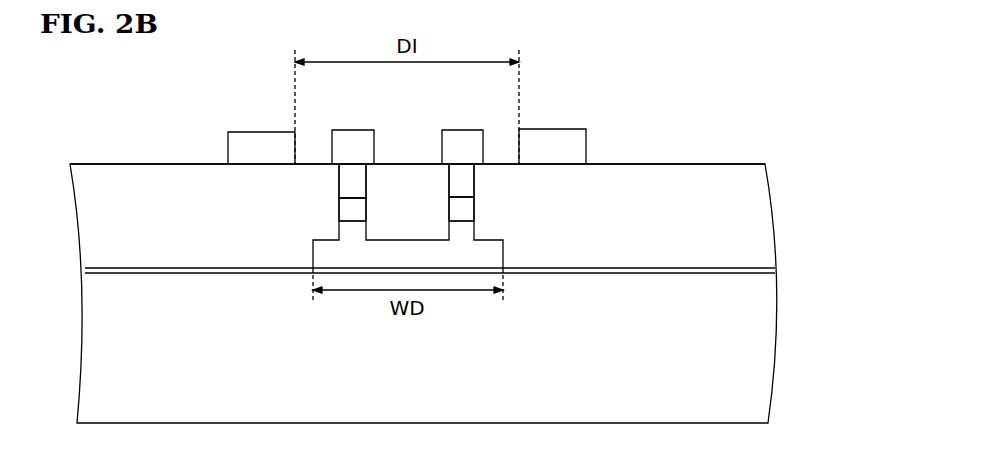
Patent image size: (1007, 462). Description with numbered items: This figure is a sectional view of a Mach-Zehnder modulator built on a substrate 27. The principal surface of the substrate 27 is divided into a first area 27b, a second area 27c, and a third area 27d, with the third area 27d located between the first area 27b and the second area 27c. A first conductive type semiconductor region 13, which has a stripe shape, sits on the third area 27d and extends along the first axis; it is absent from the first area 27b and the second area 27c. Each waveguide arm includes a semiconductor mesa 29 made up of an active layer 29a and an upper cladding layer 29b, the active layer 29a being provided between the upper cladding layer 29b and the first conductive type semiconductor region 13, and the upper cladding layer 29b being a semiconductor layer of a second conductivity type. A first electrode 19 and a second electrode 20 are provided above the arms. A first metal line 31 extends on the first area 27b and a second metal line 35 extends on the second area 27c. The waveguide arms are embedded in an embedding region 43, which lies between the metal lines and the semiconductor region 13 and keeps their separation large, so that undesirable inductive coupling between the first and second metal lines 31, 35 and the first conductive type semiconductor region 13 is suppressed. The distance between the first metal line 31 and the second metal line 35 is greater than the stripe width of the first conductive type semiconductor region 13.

The first conductive type semiconductor region 13 is at (498, 256).
The first electrode 19 is at (355, 135).
The second electrode 20 is at (461, 135).
The substrate 27 is at (760, 347).
The first area 27b is at (194, 268).
The second area 27c is at (637, 268).
The third area 27d is at (404, 268).
The semiconductor mesa 29 is at (338, 168).
The active layer 29a is at (357, 207).
The upper cladding layer 29b is at (458, 180).
The first metal line 31 is at (241, 136).
The second metal line 35 is at (571, 135).
The embedding region 43 is at (726, 170).